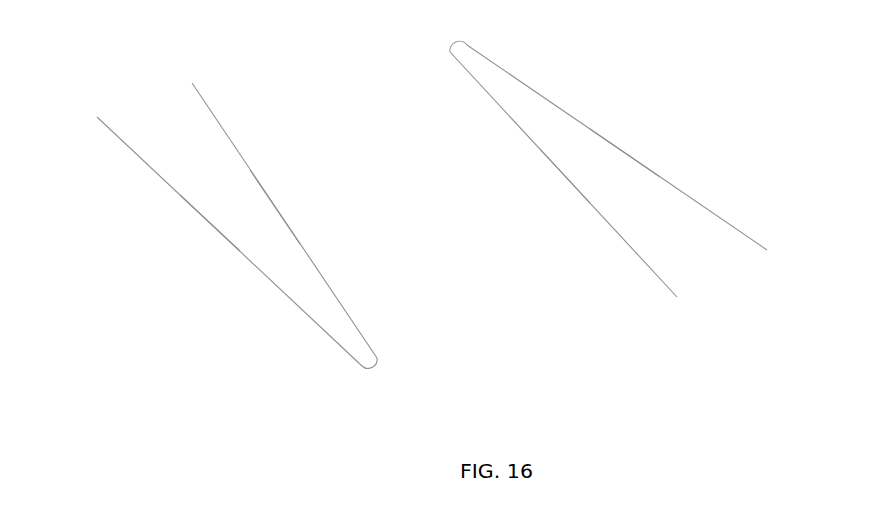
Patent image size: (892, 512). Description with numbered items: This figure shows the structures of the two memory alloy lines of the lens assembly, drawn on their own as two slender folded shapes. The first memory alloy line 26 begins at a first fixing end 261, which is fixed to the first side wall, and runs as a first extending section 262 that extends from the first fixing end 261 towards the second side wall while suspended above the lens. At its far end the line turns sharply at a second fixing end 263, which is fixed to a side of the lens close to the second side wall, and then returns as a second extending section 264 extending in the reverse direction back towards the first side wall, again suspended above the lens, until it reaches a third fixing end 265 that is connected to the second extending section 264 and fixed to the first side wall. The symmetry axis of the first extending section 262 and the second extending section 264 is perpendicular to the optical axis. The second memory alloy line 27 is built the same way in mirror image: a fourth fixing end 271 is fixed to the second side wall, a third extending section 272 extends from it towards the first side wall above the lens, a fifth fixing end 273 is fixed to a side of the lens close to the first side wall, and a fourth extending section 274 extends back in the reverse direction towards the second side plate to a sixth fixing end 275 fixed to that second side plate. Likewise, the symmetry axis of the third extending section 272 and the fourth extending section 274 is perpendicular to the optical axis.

The first memory alloy line 26 is at (609, 173).
The first fixing end 261 is at (767, 250).
The first extending section 262 is at (623, 150).
The second fixing end 263 is at (448, 50).
The second extending section 264 is at (563, 176).
The third fixing end 265 is at (676, 297).
The second memory alloy line 27 is at (240, 242).
The fourth fixing end 271 is at (194, 86).
The third extending section 272 is at (273, 205).
The fifth fixing end 273 is at (367, 368).
The fourth extending section 274 is at (210, 227).
The sixth fixing end 275 is at (97, 118).